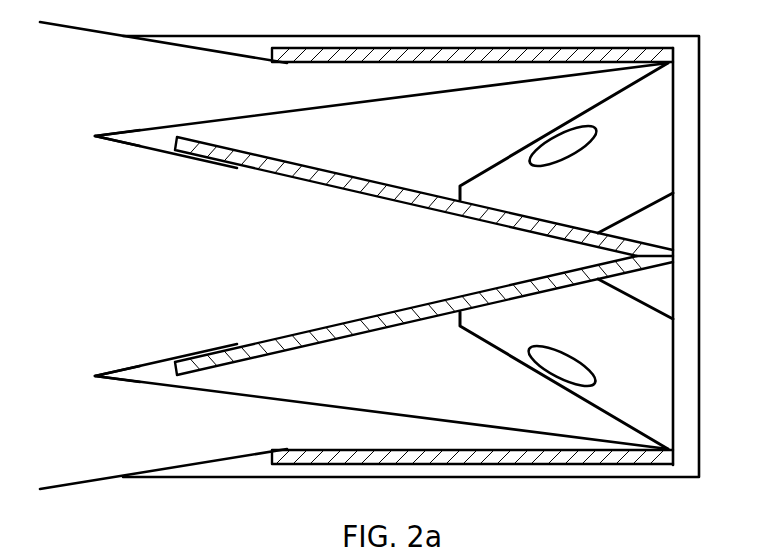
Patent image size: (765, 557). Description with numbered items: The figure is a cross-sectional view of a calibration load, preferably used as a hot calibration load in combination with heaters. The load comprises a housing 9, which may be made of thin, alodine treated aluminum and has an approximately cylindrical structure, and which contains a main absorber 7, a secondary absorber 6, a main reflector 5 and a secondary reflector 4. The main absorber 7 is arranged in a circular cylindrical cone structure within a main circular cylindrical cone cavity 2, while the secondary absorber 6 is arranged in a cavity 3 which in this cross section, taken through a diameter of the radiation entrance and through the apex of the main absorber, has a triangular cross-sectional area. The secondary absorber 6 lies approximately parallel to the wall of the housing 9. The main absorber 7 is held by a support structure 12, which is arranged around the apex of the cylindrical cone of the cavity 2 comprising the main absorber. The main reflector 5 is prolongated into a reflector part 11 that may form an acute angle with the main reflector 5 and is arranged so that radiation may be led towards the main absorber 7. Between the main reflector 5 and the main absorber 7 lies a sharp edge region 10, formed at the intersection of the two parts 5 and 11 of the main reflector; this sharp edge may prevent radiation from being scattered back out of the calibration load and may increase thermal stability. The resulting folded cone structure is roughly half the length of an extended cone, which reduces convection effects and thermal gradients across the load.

The main circular cylindrical cone cavity 2 is at (580, 228).
The cavity 3 is at (600, 75).
The secondary reflector 4 is at (49, 29).
The main reflector 5 is at (398, 100).
The secondary absorber 6 is at (335, 64).
The main absorber 7 is at (312, 182).
The housing 9 is at (700, 229).
The sharp edge region 10 is at (93, 136).
The reflector part 11 is at (167, 154).
The support structure 12 is at (656, 118).